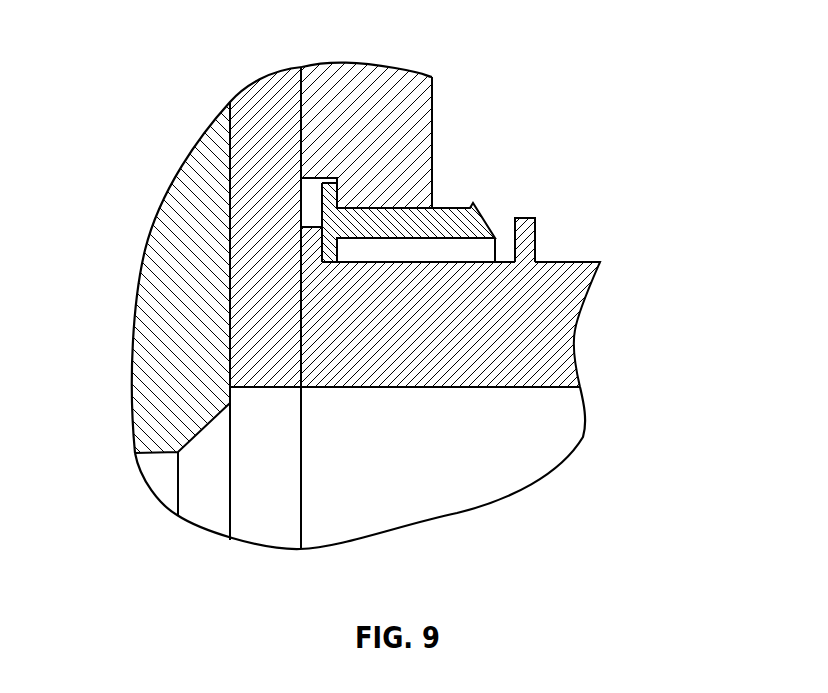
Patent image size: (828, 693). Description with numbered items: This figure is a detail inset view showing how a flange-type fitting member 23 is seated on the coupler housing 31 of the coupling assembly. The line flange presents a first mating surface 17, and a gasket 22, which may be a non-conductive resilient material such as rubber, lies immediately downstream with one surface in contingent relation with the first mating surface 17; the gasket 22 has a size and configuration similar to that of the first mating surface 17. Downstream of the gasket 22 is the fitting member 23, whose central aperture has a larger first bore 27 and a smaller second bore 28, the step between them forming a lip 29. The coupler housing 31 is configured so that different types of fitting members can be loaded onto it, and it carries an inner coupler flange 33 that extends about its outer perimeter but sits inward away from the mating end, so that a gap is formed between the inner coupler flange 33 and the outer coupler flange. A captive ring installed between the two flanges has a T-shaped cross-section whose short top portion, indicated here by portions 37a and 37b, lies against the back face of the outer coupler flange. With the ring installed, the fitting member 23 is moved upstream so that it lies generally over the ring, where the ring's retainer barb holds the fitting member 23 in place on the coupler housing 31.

The first mating surface 17 is at (228, 142).
The gasket 22 is at (244, 113).
The fitting member 23 is at (399, 131).
The first bore 27 is at (323, 175).
The second bore 28 is at (372, 207).
The lip 29 is at (418, 174).
The coupler housing 31 is at (378, 294).
The inner coupler flange 33 is at (525, 233).
The horizontal arm of L-shaped member 37a is at (437, 217).
The vertical arm of L-shaped member 37b is at (330, 201).